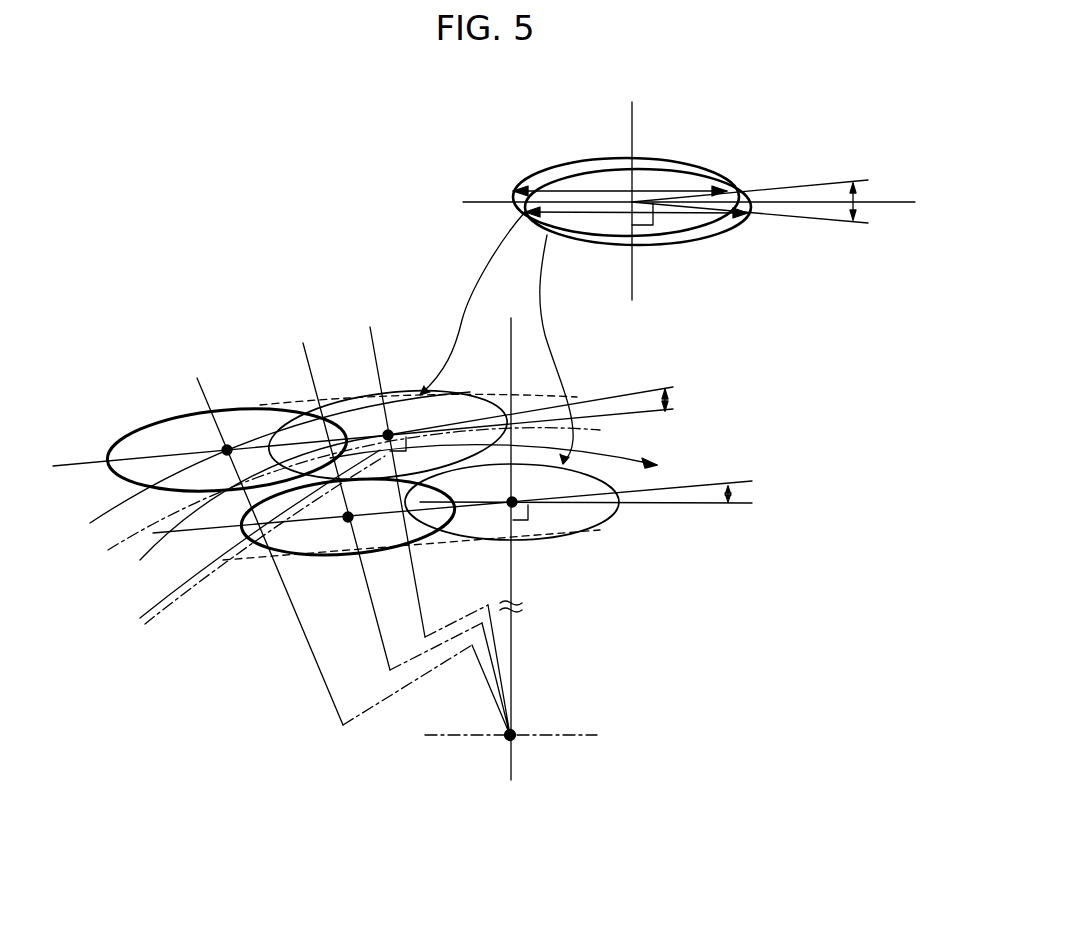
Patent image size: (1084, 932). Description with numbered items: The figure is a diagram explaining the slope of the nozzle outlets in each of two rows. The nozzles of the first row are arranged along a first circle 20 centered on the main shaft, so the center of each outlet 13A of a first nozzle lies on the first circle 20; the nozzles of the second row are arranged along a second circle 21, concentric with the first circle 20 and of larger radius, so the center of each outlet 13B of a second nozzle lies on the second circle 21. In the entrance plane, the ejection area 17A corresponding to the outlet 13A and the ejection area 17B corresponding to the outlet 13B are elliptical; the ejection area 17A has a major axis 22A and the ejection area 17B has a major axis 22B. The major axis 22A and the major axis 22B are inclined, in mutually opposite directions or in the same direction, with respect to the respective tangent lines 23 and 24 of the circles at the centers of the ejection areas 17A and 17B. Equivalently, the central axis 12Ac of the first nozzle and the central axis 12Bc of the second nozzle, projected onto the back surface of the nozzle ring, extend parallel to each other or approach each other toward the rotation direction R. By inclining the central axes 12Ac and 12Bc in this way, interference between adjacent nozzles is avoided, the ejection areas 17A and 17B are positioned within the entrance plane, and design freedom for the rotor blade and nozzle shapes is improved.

The central axis of the first nozzle 12Ac is at (220, 527).
The central axis of the second nozzle 12Bc is at (93, 457).
The outlet of the first nozzle 13A is at (297, 557).
The outlet of the second nozzle 13B is at (197, 407).
The ejection area of the first nozzle 17A is at (727, 237).
The ejection area of the second nozzle 17B is at (722, 170).
The first circle 20 is at (167, 590).
The second circle 21 is at (90, 523).
The major axis of the first ellipse 22A is at (695, 215).
The major axis of the second ellipse 22B is at (690, 183).
The tangent line 23 is at (890, 197).
The tangent line 24 is at (620, 390).
The rotation direction R is at (623, 455).